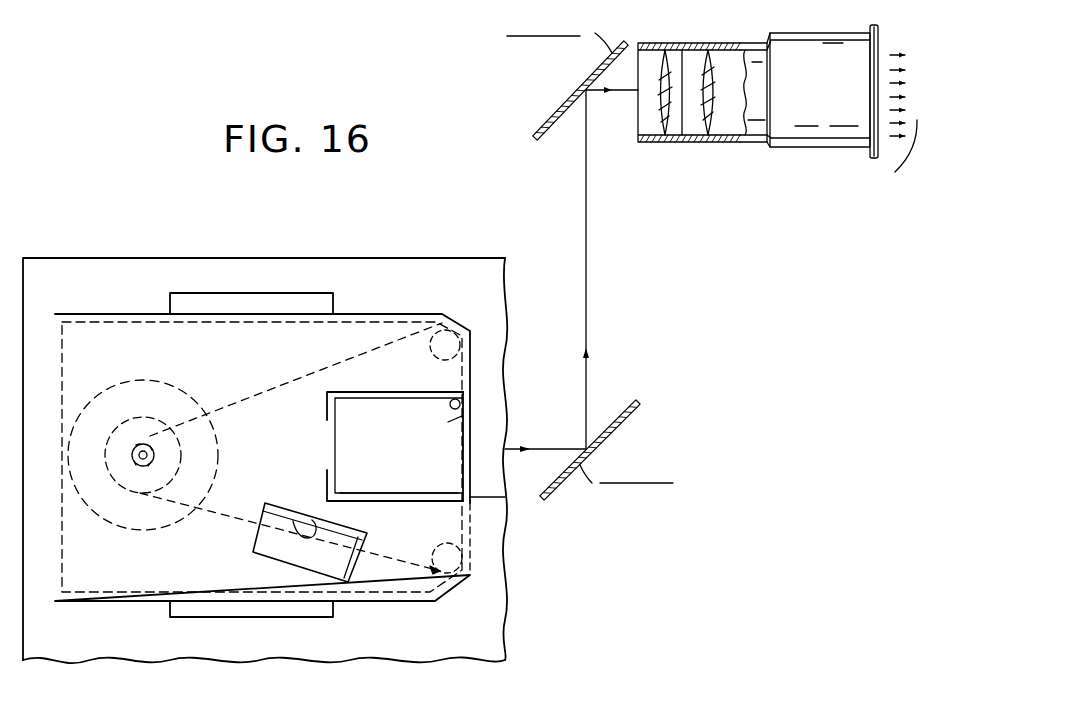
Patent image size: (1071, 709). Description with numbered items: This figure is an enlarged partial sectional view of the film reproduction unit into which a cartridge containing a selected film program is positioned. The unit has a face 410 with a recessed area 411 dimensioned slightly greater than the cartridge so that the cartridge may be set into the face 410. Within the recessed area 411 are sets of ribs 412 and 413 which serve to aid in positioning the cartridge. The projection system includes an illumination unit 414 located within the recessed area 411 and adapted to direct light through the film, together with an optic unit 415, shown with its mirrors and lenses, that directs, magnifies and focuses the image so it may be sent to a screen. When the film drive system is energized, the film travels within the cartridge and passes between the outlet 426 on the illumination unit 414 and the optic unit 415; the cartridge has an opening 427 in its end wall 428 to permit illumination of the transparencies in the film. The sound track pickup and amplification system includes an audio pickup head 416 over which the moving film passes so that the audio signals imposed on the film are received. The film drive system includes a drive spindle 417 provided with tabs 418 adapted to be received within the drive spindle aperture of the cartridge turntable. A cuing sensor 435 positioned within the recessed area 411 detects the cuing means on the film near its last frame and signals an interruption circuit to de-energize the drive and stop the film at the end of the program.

The face 410 is at (87, 258).
The recessed area 411 is at (83, 314).
The set of ribs 412 is at (380, 392).
The set of ribs 413 is at (357, 543).
The illumination unit 414 is at (418, 478).
The optic unit 415 is at (703, 216).
The audio pickup head 416 is at (296, 534).
The drive spindle 417 is at (156, 424).
The tabs 418 is at (155, 458).
The outlet 426 is at (448, 422).
The opening 427 is at (464, 436).
The end wall 428 is at (470, 500).
The cuing sensor 435 is at (458, 402).